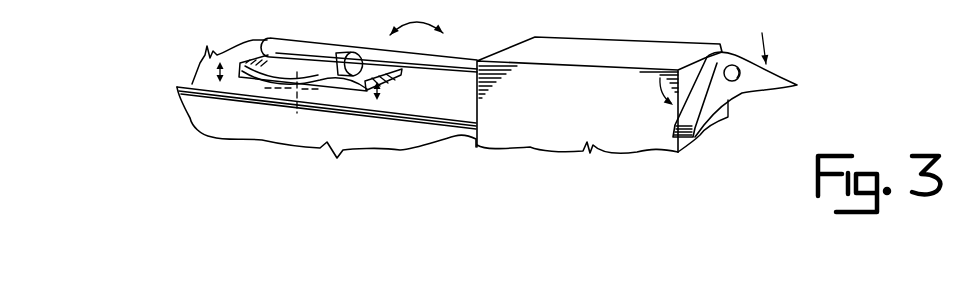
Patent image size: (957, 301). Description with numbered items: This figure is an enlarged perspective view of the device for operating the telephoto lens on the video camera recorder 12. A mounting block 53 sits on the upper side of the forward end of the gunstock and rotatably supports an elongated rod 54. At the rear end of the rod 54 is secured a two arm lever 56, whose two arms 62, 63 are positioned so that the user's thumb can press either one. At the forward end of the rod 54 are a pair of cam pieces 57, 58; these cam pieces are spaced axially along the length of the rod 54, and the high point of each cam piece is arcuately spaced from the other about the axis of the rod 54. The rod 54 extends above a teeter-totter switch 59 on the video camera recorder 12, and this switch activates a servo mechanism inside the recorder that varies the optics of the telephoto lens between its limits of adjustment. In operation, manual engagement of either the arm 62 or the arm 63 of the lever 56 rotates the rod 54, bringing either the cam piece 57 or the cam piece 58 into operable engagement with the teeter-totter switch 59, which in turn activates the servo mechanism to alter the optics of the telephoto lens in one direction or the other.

The video camera recorder 12 is at (190, 83).
The mounting block 53 is at (590, 47).
The elongated rod 54 is at (443, 53).
The two arm lever 56 is at (755, 91).
The cam piece 57 is at (338, 70).
The cam piece 58 is at (278, 62).
The teeter-totter switch 59 is at (253, 67).
The arm 62 is at (693, 128).
The arm 63 is at (773, 72).